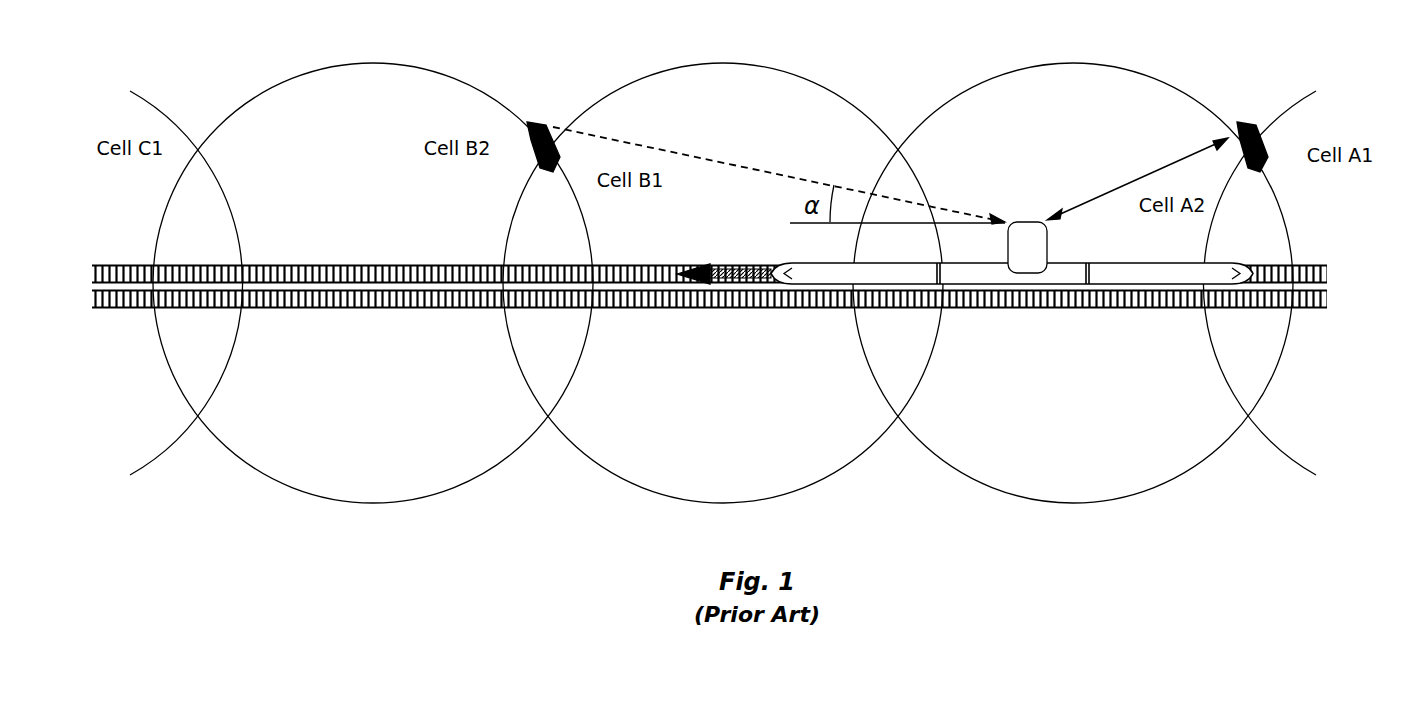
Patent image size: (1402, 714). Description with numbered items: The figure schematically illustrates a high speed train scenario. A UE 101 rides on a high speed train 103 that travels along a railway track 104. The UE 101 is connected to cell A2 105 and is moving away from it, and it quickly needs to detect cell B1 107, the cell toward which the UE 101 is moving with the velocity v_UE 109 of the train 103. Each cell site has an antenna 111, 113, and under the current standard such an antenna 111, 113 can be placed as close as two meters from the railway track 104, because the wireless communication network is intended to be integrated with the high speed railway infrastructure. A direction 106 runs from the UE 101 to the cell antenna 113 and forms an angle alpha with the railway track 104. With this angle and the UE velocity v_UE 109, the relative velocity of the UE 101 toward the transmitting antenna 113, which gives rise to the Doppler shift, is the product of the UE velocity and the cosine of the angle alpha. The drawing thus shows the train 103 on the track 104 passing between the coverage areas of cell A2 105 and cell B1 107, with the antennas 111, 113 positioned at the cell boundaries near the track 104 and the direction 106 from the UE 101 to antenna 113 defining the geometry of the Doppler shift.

The UE 101 is at (1026, 222).
The high speed train 103 is at (791, 300).
The railway track 104 is at (1310, 265).
The cell A2 105 is at (1142, 70).
The direction to a cell antenna 106 is at (716, 160).
The cell B1 107 is at (750, 62).
The velocity v_UE 109 is at (698, 265).
The antenna 111 is at (1252, 128).
The antenna 113 is at (547, 128).